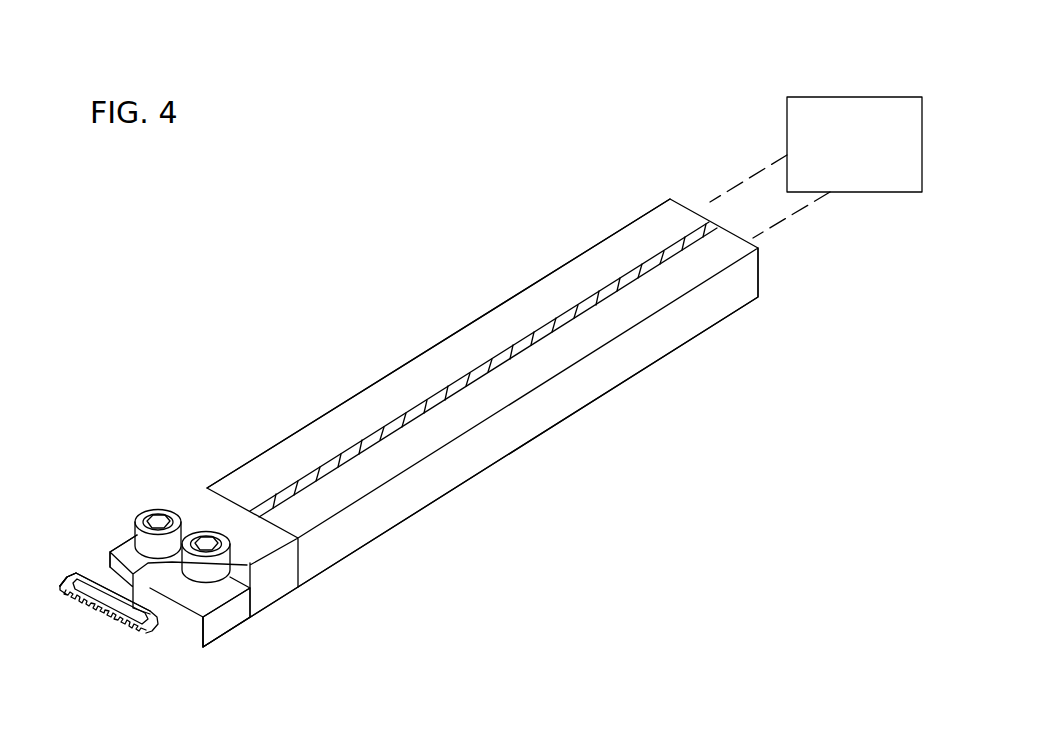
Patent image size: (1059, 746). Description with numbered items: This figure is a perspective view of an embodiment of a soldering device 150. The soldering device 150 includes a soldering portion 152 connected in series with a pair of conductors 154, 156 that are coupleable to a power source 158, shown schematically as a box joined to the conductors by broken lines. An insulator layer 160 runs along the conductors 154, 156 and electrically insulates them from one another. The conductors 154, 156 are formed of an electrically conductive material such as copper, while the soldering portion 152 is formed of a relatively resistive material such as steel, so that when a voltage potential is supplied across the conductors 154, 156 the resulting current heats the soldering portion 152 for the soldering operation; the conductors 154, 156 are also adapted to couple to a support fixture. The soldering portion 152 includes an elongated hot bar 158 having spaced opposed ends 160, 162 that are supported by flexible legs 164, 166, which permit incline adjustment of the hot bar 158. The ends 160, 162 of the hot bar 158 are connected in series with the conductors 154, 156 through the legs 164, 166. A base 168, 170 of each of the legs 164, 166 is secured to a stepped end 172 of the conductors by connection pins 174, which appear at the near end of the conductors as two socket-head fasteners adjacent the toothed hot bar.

The soldering device 150 is at (390, 340).
The soldering portion 152 is at (97, 567).
The conductor 154 is at (547, 277).
The conductor 156 is at (612, 369).
The power source / hot bar 158 is at (855, 93).
The insulator layer / hot bar end 160 is at (387, 425).
The hot bar end 162 is at (64, 588).
The flexible leg 164 is at (215, 632).
The flexible leg 166 is at (85, 575).
The base of leg 168 is at (232, 578).
The base of leg 170 is at (125, 547).
The stepped end of conductor 172 is at (230, 614).
The connection pin 174 is at (180, 512).